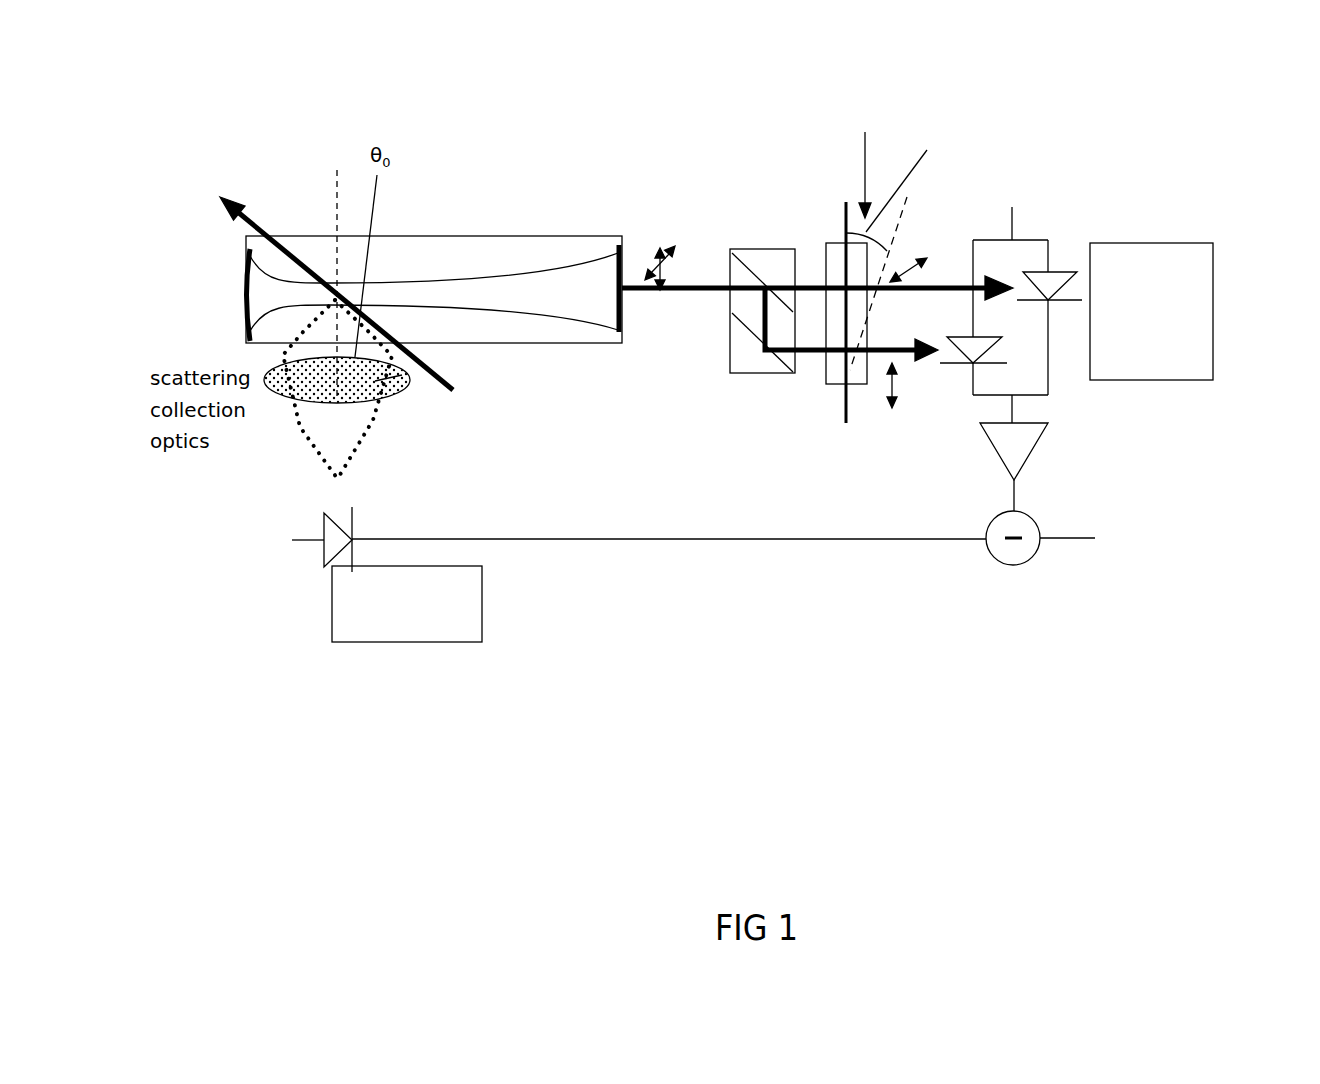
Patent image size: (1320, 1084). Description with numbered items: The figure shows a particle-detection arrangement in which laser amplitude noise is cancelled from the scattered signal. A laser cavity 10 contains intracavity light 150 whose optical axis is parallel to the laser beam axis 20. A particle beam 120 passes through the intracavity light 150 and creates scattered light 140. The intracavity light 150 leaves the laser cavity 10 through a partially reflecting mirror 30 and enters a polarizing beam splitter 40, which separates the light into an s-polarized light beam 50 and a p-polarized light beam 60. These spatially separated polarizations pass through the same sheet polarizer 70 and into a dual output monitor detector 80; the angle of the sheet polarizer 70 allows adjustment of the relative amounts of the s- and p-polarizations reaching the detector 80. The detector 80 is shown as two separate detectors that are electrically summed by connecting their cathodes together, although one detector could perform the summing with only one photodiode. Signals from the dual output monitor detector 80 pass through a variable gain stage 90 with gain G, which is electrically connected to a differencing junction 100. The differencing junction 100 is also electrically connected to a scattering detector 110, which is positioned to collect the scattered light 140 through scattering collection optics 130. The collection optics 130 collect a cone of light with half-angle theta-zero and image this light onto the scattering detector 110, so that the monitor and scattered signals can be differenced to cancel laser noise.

The laser cavity 10 is at (561, 182).
The laser beam axis 20 is at (683, 292).
The partially reflecting mirror 30 is at (625, 310).
The polarizing beam splitter 40 is at (743, 242).
The s-polarized light beam 50 is at (804, 345).
The p-polarized light beam 60 is at (812, 357).
The sheet polarizer 70 is at (865, 377).
The dual output monitor detector 80 is at (1213, 340).
The gain stage 90 is at (1028, 458).
The differencing junction 100 is at (988, 556).
The scattering detector 110 is at (482, 610).
The particle beam 120 is at (264, 228).
The scattering collection optics 130 is at (405, 380).
The scattered light 140 is at (246, 333).
The intracavity light 150 is at (498, 295).